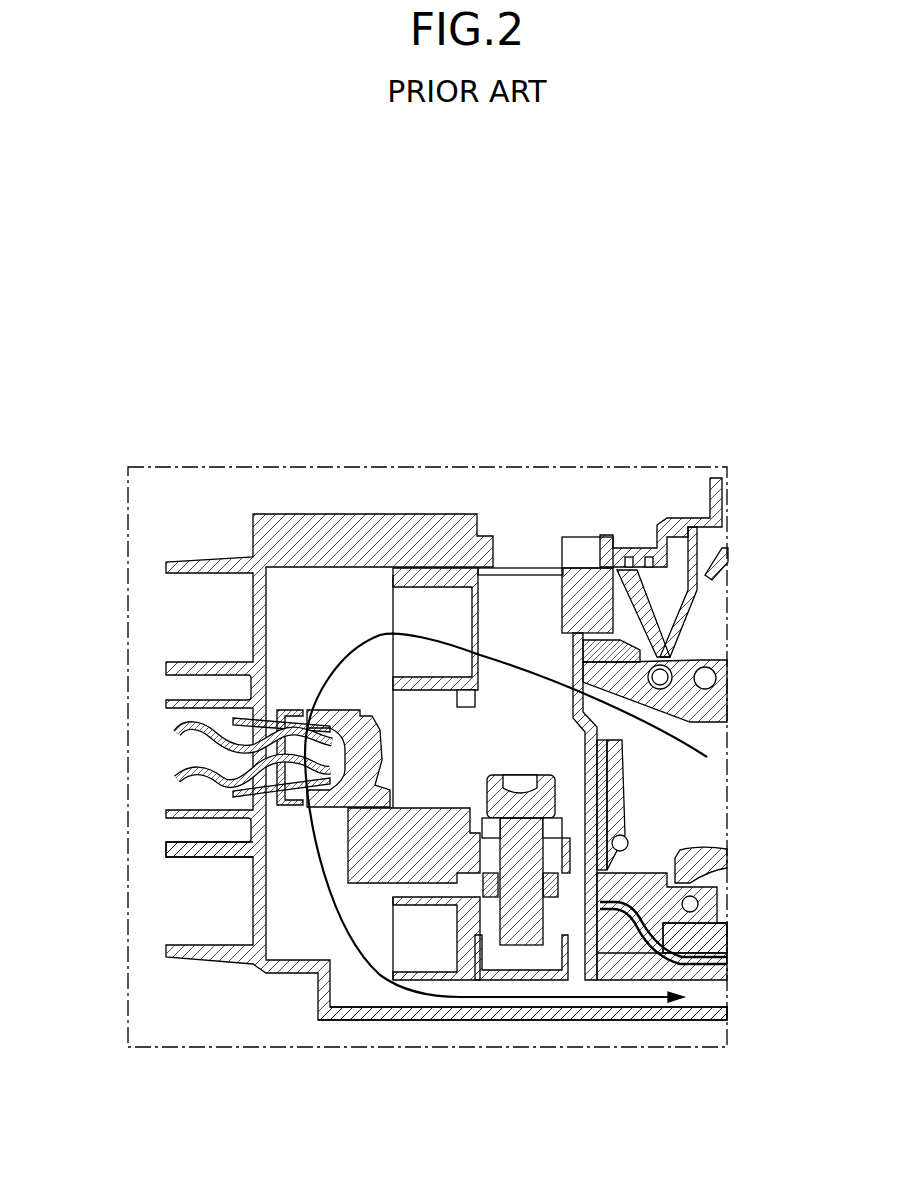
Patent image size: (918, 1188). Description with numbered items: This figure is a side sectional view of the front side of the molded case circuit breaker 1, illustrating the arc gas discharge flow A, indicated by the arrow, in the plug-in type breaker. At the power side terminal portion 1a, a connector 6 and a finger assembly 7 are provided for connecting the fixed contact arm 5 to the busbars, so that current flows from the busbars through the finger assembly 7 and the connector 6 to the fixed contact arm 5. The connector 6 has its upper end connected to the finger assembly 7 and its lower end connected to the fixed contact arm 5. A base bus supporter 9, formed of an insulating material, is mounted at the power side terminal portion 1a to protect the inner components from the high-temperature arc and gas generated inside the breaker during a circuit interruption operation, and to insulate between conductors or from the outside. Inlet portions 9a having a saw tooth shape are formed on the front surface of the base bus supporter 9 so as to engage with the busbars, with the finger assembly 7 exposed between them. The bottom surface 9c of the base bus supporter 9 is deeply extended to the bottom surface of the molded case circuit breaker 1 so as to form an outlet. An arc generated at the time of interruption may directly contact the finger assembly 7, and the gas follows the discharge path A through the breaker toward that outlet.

The molded case circuit breaker 1 is at (707, 976).
The power side terminal portion 1a is at (432, 948).
The fixed contact arm 5 is at (707, 938).
The connector 6 is at (360, 720).
The finger assembly 7 is at (240, 715).
The base bus supporter 9 is at (287, 968).
The inlet portions 9a is at (166, 846).
The bottom surface 9c is at (630, 1020).
The air flow path A is at (683, 743).